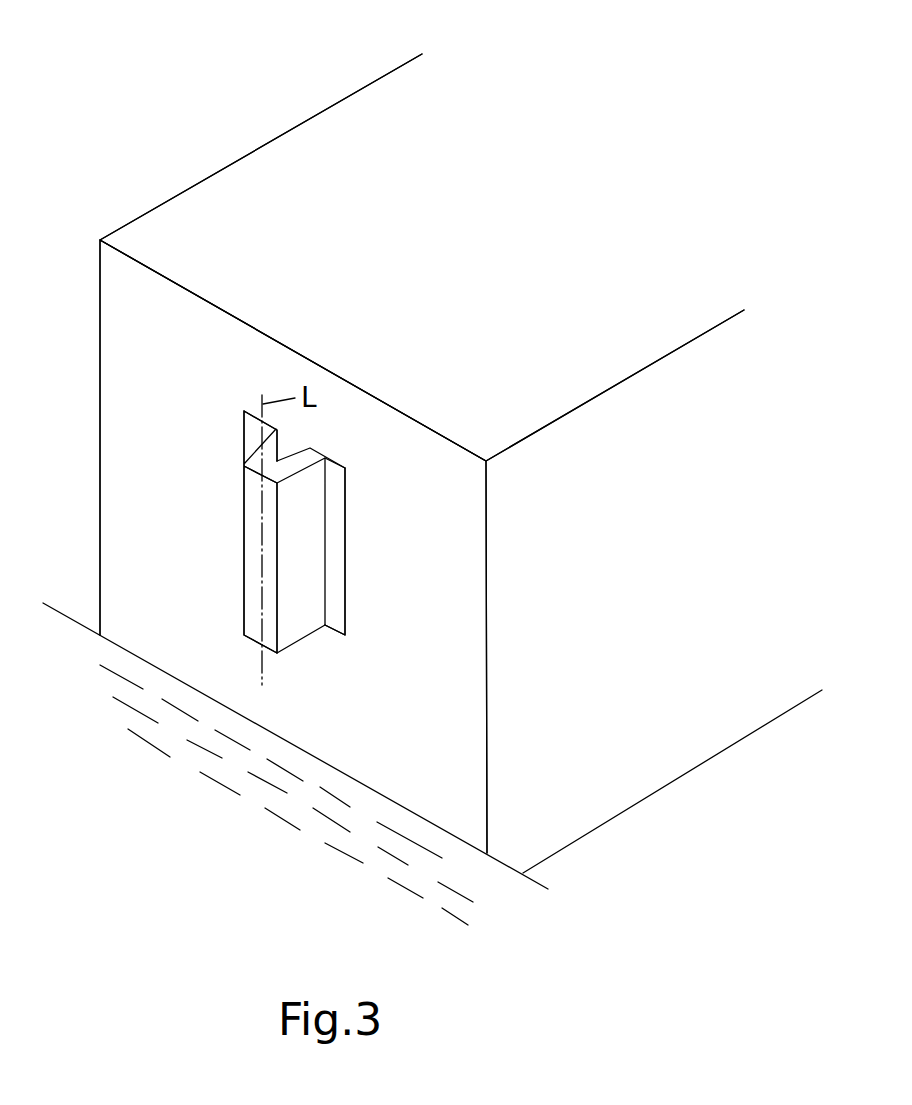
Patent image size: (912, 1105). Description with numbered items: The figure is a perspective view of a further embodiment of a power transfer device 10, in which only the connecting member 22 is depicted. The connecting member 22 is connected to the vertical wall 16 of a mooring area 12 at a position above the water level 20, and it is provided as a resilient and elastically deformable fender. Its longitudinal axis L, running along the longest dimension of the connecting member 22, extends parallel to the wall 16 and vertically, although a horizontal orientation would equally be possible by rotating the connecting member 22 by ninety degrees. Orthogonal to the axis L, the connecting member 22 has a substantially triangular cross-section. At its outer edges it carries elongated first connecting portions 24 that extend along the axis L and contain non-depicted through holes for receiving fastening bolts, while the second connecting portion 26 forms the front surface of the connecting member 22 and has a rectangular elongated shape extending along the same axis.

The power transfer device 10 is at (104, 166).
The mooring area 12 is at (280, 80).
The wall 16 is at (450, 530).
The water level 20 is at (497, 860).
The connecting member 22 is at (312, 593).
The first connecting portions 24 is at (250, 431).
The second connecting portion 26 is at (257, 626).